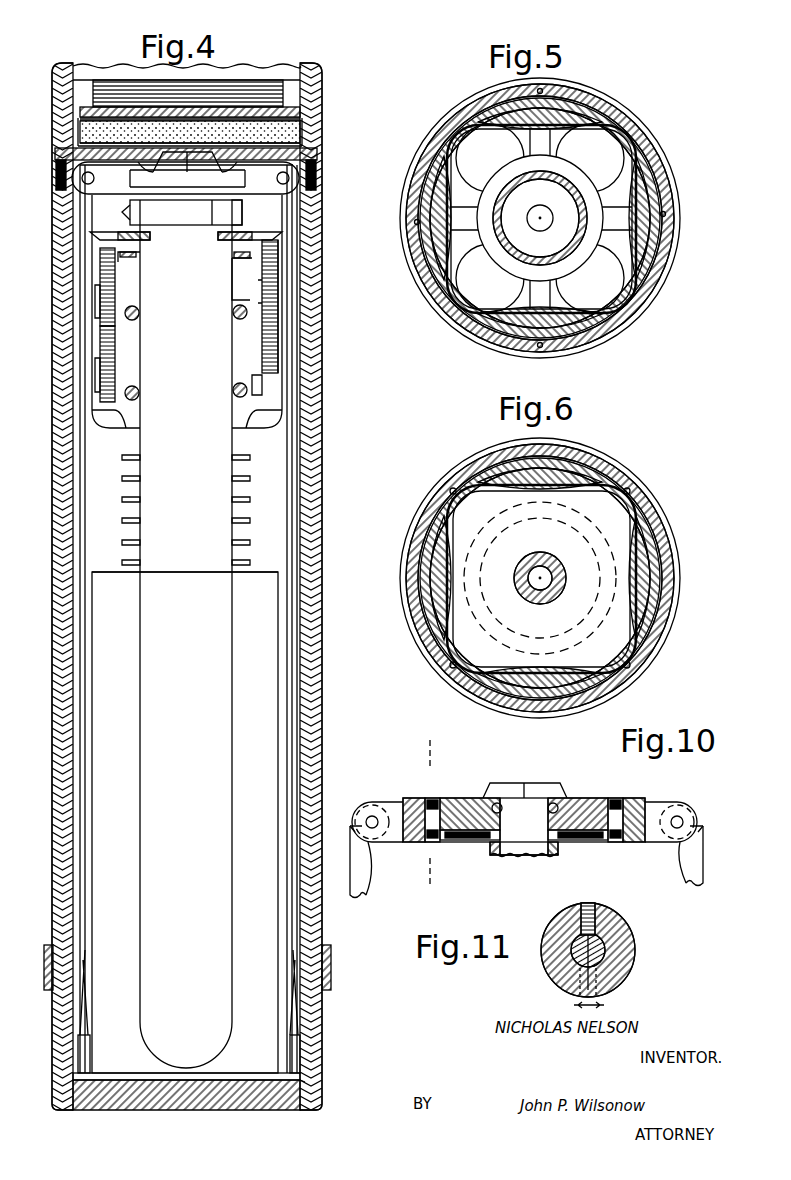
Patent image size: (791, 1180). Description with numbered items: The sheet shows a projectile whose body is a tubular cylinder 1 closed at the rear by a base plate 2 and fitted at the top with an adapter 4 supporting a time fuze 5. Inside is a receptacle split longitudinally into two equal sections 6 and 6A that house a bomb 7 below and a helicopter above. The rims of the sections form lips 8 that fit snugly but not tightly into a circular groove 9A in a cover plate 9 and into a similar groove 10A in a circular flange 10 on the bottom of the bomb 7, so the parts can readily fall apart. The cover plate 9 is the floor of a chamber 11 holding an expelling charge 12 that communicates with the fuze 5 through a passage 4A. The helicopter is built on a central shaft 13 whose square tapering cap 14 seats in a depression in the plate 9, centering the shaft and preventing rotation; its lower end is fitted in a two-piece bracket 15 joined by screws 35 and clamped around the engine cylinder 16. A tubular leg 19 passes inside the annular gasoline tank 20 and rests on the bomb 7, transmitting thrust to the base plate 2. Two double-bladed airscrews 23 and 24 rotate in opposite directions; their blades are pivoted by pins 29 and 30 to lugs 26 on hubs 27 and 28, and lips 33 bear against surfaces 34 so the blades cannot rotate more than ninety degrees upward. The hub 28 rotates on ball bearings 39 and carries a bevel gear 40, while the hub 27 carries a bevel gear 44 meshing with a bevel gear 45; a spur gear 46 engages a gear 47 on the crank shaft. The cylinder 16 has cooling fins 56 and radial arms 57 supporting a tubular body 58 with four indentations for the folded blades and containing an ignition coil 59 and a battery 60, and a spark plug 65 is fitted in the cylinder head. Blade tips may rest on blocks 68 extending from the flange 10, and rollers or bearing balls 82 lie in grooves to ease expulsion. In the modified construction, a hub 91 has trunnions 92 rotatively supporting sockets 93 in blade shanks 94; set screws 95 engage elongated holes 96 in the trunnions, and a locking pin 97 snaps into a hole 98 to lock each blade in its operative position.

In FIG. 4, the tubular cylinder 1 is at (312, 246).
In FIG. 5, the tubular cylinder 1 is at (600, 108).
In FIG. 6, the tubular cylinder 1 is at (604, 468).
In FIG. 4, the base plate 2 is at (216, 1110).
In FIG. 4, the adapter 4 is at (304, 108).
In FIG. 4, the passage 4A is at (185, 92).
In FIG. 4, the time fuze 5 is at (280, 66).
In FIG. 4, the receptacle section 6 is at (305, 455).
In FIG. 5, the receptacle section 6 is at (640, 150).
In FIG. 6, the receptacle section 6 is at (642, 518).
In FIG. 4, the receptacle section 6A is at (62, 450).
In FIG. 5, the receptacle section 6A is at (422, 248).
In FIG. 6, the receptacle section 6A is at (432, 628).
In FIG. 4, the bomb 7 is at (200, 646).
In FIG. 4, the lips 8 is at (306, 152).
In FIG. 4, the cover plate 9 is at (303, 139).
In FIG. 4, the circular groove 9A is at (58, 172).
In FIG. 4, the circular flange 10 is at (247, 1073).
In FIG. 4, the groove 10A is at (306, 1083).
In FIG. 4, the chamber 11 is at (302, 121).
In FIG. 10, the chamber 11 is at (430, 815).
In FIG. 4, the expelling charge 12 is at (80, 135).
In FIG. 10, the shaft 13 is at (522, 857).
In FIG. 4, the cap 14 is at (200, 165).
In FIG. 10, the cap 14 is at (486, 790).
In FIG. 4, the bracket 15 is at (236, 274).
In FIG. 5, the cylinder 16 is at (575, 188).
In FIG. 6, the tubular leg 19 is at (552, 566).
In FIG. 6, the gasoline tank 20 is at (623, 571).
In FIG. 4, the airscrew 23 is at (233, 632).
In FIG. 5, the airscrew 23 is at (566, 322).
In FIG. 6, the airscrew 23 is at (548, 690).
In FIG. 4, the airscrew 24 is at (295, 341).
In FIG. 5, the airscrew 24 is at (664, 190).
In FIG. 6, the airscrew 24 is at (660, 572).
In FIG. 10, the airscrew 24 is at (700, 860).
In FIG. 4, the lugs 26 is at (252, 212).
In FIG. 4, the hub 27 is at (226, 240).
In FIG. 4, the hub 28 is at (186, 214).
In FIG. 4, the pivot pin 29 is at (126, 213).
In FIG. 4, the pivot pin 30 is at (310, 178).
In FIG. 10, the pivot pin 30 is at (683, 822).
In FIG. 10, the lips 33 is at (703, 832).
In FIG. 10, the surfaces 34 is at (688, 800).
In FIG. 4, the screws 35 is at (235, 393).
In FIG. 10, the ball bearings 39 is at (560, 792).
In FIG. 4, the bevel gear 40 is at (140, 257).
In FIG. 4, the bevel gear 44 is at (143, 234).
In FIG. 4, the bevel gear 45 is at (262, 344).
In FIG. 4, the spur gear 46 is at (115, 297).
In FIG. 4, the gear 47 is at (115, 366).
In FIG. 4, the cooling fins 56 is at (250, 497).
In FIG. 5, the radial arms 57 is at (615, 226).
In FIG. 4, the tubular body 58 is at (262, 571).
In FIG. 5, the tubular body 58 is at (612, 115).
In FIG. 6, the tubular body 58 is at (640, 546).
In FIG. 5, the ignition coil 59 is at (470, 292).
In FIG. 5, the battery 60 is at (618, 276).
In FIG. 5, the spark plug 65 is at (544, 209).
In FIG. 4, the lugs or blocks 68 is at (88, 1055).
In FIG. 5, the rollers or bearing balls 82 is at (666, 214).
In FIG. 10, the hub 91 is at (575, 798).
In FIG. 10, the trunnions 92 is at (425, 842).
In FIG. 11, the trunnions 92 is at (606, 946).
In FIG. 10, the sockets 93 is at (440, 798).
In FIG. 11, the sockets 93 is at (618, 916).
In FIG. 10, the blade shanks 94 is at (376, 802).
In FIG. 10, the set screws 95 is at (430, 798).
In FIG. 11, the set screws 95 is at (590, 903).
In FIG. 11, the holes 96 is at (620, 932).
In FIG. 10, the locking pin 97 is at (598, 842).
In FIG. 11, the locking pin 97 is at (610, 980).
In FIG. 10, the hole 98 is at (448, 842).